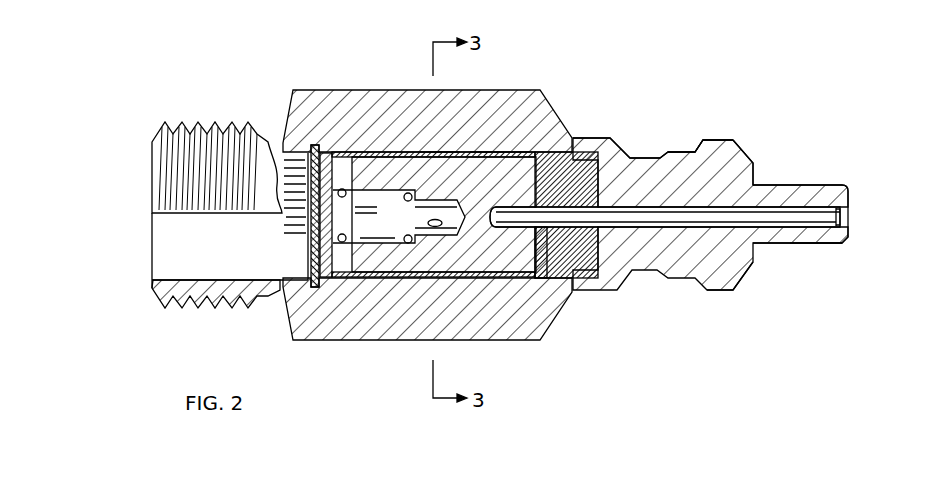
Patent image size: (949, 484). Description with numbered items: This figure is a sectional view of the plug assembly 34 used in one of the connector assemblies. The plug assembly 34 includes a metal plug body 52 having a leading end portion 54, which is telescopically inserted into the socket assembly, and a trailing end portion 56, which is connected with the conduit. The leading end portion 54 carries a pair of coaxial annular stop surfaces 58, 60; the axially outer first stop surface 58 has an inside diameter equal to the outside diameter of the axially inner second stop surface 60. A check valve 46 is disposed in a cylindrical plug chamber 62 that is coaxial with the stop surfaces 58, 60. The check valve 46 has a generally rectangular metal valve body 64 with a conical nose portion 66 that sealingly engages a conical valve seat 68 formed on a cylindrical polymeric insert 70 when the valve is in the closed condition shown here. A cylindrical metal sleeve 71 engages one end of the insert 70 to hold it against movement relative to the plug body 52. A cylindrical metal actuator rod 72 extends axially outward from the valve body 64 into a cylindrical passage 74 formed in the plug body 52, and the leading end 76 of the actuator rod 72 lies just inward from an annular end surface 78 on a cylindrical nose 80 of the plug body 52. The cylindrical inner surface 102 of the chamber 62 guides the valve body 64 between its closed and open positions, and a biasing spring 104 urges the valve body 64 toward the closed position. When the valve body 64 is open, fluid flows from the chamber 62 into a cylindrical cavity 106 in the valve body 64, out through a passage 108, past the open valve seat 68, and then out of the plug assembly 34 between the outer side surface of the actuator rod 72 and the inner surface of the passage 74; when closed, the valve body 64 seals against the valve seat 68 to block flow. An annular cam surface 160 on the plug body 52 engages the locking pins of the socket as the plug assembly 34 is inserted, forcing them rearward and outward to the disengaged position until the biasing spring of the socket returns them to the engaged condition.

The plug assembly 34 is at (697, 101).
The check valve 46 is at (573, 136).
The plug body 52 is at (334, 84).
The leading end portion 54 is at (751, 145).
The trailing end portion 56 is at (198, 122).
The first stop surface 58 is at (709, 140).
The second stop surface 60 is at (660, 150).
The plug chamber 62 is at (334, 280).
The valve body 64 is at (387, 284).
The conical nose portion 66 is at (510, 232).
The valve seat 68 is at (541, 230).
The insert 70 is at (581, 262).
The sleeve 71 is at (486, 150).
The actuator rod 72 is at (786, 212).
The passage 74 is at (808, 238).
The leading end 76 is at (838, 233).
The end surface 78 is at (842, 216).
The nose 80 is at (827, 190).
The cylindrical inner surface 102 is at (347, 168).
The biasing spring 104 is at (316, 287).
The cavity 106 is at (434, 150).
The passage 108 is at (428, 222).
The cam surface 160 is at (745, 283).